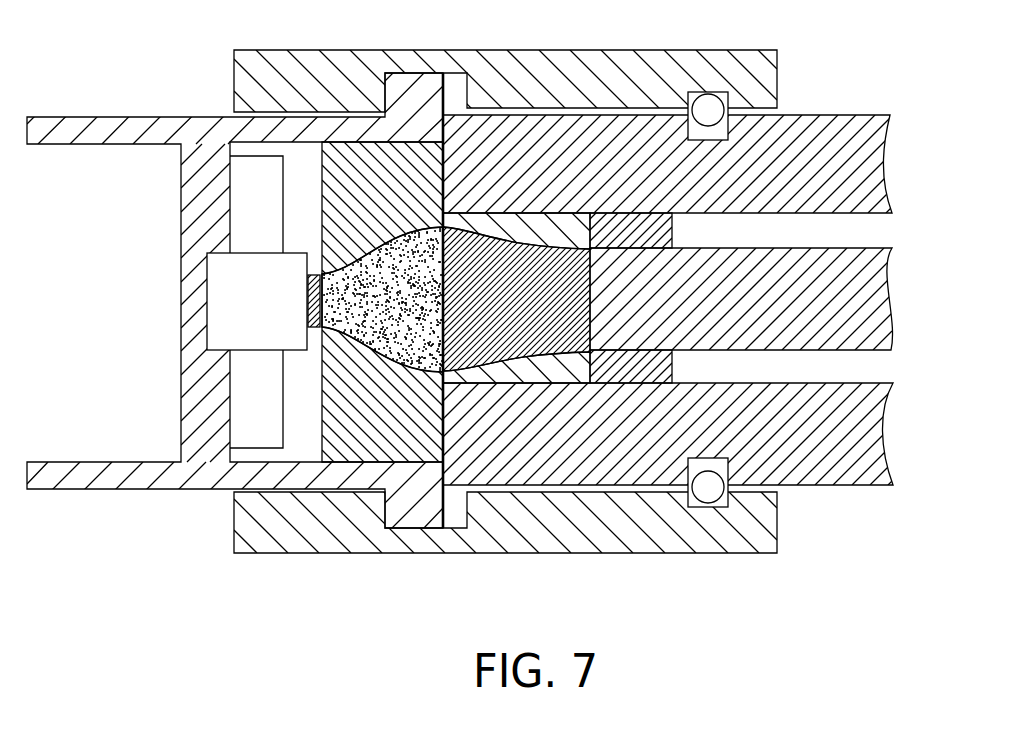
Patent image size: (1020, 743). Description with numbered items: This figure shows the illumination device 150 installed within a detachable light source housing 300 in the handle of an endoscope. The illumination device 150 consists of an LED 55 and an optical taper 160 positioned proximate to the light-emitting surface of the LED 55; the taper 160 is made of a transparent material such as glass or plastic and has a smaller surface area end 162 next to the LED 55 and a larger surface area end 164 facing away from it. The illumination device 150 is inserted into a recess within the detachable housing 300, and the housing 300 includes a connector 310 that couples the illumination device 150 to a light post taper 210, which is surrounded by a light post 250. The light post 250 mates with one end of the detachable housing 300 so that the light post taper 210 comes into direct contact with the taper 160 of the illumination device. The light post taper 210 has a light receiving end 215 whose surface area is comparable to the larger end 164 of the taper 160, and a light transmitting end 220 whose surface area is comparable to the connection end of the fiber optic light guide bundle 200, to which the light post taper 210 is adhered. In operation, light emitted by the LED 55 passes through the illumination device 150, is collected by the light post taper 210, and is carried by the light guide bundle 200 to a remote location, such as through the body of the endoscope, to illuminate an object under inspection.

The LED 55 is at (313, 275).
The illumination device 150 is at (418, 312).
The optical taper 160 is at (367, 345).
The smaller surface area end 162 is at (318, 328).
The larger surface area end 164 is at (455, 226).
The light guide bundle 200 is at (855, 311).
The light post taper 210 is at (522, 240).
The light receiving end 215 is at (447, 378).
The light transmitting end 220 is at (594, 240).
The light post 250 is at (838, 114).
The detachable light source housing 300 is at (157, 489).
The connector 310 is at (587, 553).